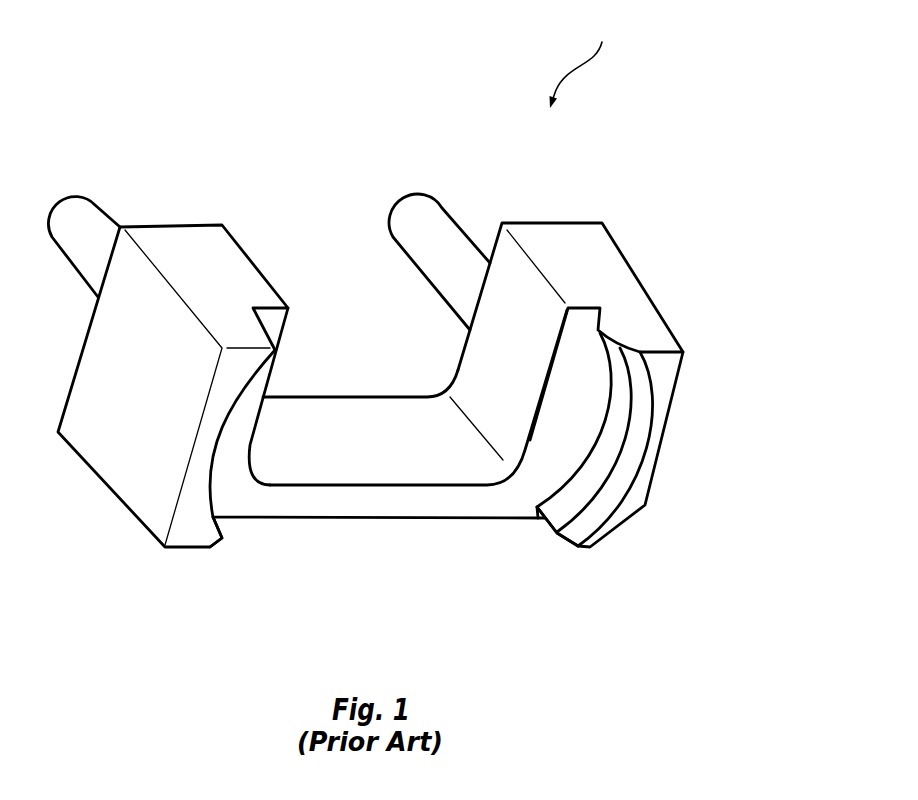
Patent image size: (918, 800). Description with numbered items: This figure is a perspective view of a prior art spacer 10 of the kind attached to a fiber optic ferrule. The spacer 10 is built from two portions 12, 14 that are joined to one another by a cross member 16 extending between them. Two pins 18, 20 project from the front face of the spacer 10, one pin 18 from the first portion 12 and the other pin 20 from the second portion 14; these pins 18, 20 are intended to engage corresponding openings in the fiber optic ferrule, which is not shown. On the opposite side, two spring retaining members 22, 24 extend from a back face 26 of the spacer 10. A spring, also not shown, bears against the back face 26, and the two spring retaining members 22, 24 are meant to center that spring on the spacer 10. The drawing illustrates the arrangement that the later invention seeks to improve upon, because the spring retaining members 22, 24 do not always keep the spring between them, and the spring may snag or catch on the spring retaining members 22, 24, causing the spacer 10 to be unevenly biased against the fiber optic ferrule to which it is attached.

The spacer 10 is at (582, 63).
The portion 12 is at (119, 503).
The portion 14 is at (682, 338).
The cross member 16 is at (415, 520).
The pin 18 is at (90, 202).
The pin 20 is at (442, 208).
The spring retaining member 22 is at (221, 530).
The spring retaining member 24 is at (663, 442).
The back face 26 is at (542, 472).